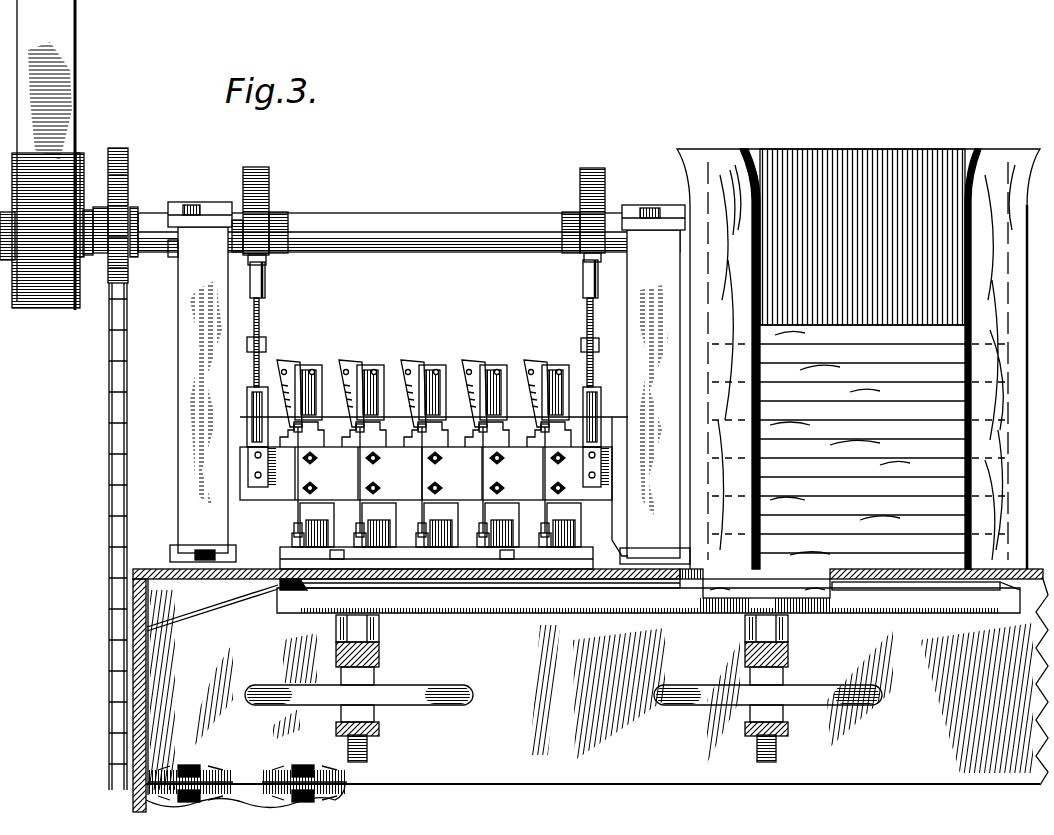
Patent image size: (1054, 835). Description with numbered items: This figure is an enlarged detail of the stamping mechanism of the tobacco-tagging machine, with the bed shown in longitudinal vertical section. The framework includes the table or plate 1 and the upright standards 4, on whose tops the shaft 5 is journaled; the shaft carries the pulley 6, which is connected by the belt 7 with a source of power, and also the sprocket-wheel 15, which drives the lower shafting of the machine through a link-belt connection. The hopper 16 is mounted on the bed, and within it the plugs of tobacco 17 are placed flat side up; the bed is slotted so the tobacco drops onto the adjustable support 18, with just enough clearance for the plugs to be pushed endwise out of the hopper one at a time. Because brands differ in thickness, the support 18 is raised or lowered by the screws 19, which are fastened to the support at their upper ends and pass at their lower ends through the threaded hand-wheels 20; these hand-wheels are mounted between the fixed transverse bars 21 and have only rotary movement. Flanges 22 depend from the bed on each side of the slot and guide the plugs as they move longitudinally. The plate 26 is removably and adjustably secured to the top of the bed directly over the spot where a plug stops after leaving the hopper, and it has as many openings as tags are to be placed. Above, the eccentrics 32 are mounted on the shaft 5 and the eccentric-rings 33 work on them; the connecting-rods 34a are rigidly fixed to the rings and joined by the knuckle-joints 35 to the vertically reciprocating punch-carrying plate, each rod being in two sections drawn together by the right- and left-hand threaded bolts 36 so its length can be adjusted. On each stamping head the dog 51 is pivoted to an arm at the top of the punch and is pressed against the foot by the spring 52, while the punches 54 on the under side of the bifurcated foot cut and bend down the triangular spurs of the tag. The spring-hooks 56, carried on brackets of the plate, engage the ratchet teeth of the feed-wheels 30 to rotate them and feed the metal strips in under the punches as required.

The table or plate 1 is at (175, 715).
The standards 4 is at (190, 468).
The shaft 5 is at (374, 213).
The pulley 6 is at (84, 158).
The belt 7 is at (65, 40).
The sprocket-wheel 15 is at (130, 168).
The hopper 16 is at (858, 148).
The plugs of tobacco 17 is at (855, 374).
The adjustable support 18 is at (438, 614).
The screws 19 is at (368, 750).
The hand-wheels 20 is at (820, 680).
The transverse bars 21 is at (335, 657).
The flanges 22 is at (607, 592).
The plate 26 is at (285, 558).
The feed-wheels 30 is at (300, 534).
The eccentrics 32 is at (283, 210).
The eccentric-rings 33 is at (268, 177).
The connecting-rods 34a is at (265, 288).
The knuckle-joints 35 is at (245, 435).
The bolts 36 is at (262, 320).
The dog 51 is at (345, 372).
The spring 52 is at (418, 366).
The punches 54 is at (518, 479).
The spring-hooks 56 is at (300, 475).